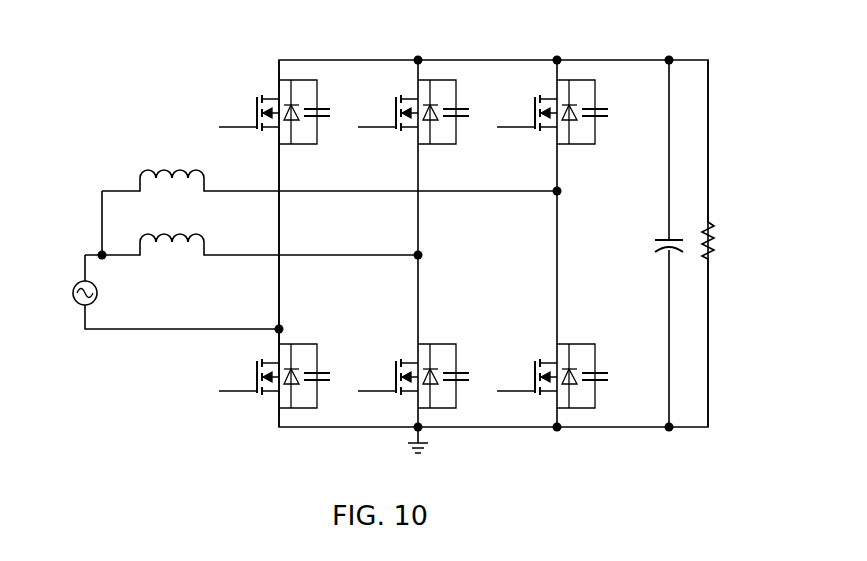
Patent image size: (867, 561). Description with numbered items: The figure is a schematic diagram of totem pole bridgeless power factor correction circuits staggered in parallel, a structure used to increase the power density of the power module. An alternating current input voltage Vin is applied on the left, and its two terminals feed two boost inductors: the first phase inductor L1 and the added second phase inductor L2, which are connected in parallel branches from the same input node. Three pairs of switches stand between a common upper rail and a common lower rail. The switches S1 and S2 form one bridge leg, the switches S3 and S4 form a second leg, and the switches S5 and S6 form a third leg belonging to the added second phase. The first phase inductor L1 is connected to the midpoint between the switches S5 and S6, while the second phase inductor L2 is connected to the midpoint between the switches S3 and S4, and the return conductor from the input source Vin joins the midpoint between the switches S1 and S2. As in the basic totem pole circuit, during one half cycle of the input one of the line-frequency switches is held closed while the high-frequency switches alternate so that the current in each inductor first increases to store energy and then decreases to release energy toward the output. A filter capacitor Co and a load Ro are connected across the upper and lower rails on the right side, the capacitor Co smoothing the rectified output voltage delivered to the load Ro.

The switch S1 is at (274, 112).
The switch S2 is at (274, 376).
The switch S3 is at (413, 112).
The switch S4 is at (413, 376).
The switch S5 is at (552, 112).
The switch S6 is at (552, 376).
The first phase inductor L1 is at (329, 169).
The second phase inductor L2 is at (251, 234).
The alternating current input voltage Vin is at (67, 293).
The filter capacitor Co is at (673, 243).
The load Ro is at (717, 243).